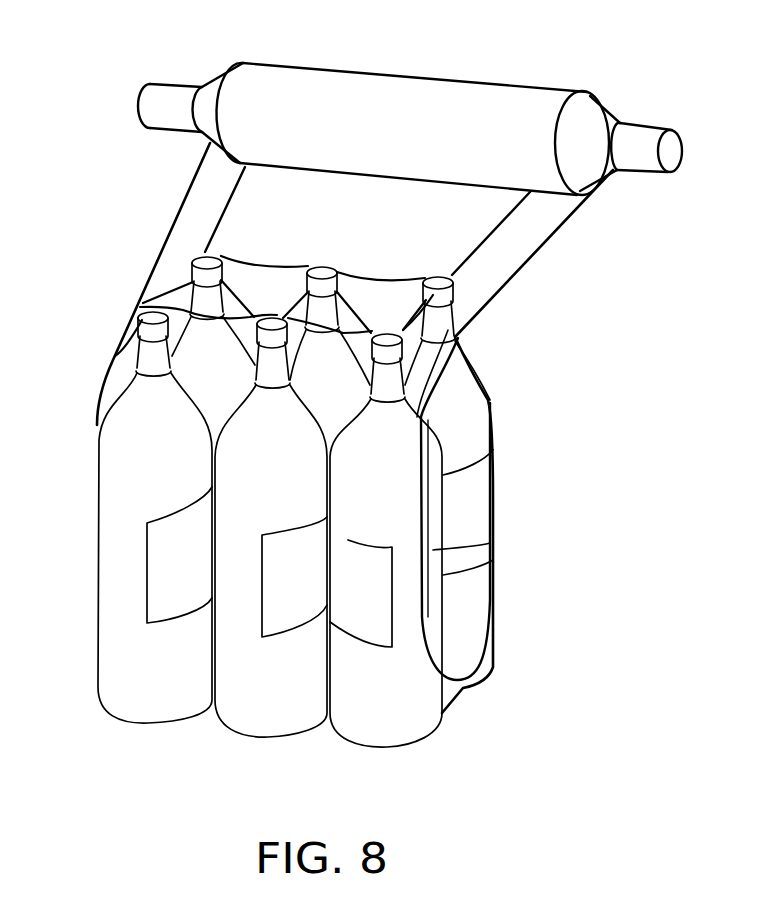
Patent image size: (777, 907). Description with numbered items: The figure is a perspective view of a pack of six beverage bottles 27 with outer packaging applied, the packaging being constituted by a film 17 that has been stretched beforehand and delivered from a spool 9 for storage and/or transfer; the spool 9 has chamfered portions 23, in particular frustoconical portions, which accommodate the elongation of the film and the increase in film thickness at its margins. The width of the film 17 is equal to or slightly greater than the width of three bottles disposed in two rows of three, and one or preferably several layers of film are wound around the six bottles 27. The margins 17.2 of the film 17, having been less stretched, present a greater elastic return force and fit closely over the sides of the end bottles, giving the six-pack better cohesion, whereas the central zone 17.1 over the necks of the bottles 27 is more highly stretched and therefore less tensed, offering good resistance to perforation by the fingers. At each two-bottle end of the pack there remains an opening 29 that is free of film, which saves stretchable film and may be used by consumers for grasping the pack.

The spool 9 is at (650, 108).
The film 17 is at (373, 428).
The longitudinal zone of the film 17.1 is at (383, 235).
The margins of the film 17.2 is at (203, 210).
The chamfered portions 23 is at (439, 105).
The bottles 27 is at (475, 555).
The opening 29 is at (435, 367).